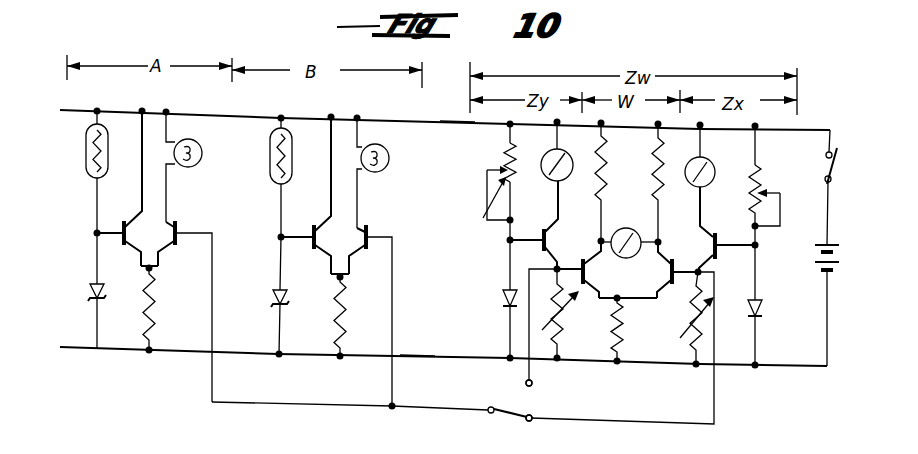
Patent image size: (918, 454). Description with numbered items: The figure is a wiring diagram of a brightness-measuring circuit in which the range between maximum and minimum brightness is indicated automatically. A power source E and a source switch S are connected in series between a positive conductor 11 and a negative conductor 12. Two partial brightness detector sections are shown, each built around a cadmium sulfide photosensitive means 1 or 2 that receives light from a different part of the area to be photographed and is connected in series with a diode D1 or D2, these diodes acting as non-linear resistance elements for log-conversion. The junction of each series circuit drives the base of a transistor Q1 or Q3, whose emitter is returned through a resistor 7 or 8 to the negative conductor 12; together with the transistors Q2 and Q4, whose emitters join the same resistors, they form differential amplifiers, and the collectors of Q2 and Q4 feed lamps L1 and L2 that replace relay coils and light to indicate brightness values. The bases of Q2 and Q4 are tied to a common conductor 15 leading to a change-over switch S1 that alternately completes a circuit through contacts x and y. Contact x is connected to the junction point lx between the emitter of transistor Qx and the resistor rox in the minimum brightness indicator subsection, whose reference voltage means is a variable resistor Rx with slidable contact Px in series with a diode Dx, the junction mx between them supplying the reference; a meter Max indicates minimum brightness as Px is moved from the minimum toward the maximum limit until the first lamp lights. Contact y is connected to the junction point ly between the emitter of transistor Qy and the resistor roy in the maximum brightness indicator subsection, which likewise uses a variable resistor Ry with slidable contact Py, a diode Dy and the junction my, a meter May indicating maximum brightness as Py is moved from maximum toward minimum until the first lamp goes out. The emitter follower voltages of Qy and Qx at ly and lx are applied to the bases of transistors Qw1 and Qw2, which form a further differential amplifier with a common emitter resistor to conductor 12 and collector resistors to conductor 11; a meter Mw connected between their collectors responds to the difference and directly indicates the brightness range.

The photosensitive means 1 is at (86, 150).
The photosensitive means 2 is at (270, 172).
The resistor 7 is at (160, 300).
The resistor 8 is at (349, 317).
The positive conductor 11 is at (458, 122).
The negative conductor 12 is at (416, 356).
The common conductor 15 is at (466, 409).
The transistor Q1 is at (139, 208).
The transistor Q2 is at (168, 222).
The transistor Q3 is at (327, 211).
The transistor Q4 is at (360, 225).
The lamp L1 is at (206, 140).
The lamp L2 is at (396, 149).
The diode D1 is at (90, 290).
The diode D2 is at (272, 295).
The slidable contact Py is at (487, 169).
The variable resistor Ry is at (483, 218).
The node my is at (506, 244).
The diode Dy is at (500, 306).
The transistor Qy is at (552, 243).
The meter May is at (571, 150).
The junction point ly is at (546, 270).
The resistor roy is at (569, 315).
The transistor Qw1 is at (599, 209).
The transistor Qw2 is at (670, 292).
The meter Mw is at (629, 230).
The resistor rox is at (686, 320).
The meter Max is at (717, 155).
The transistor Qx is at (714, 228).
The junction point lx is at (716, 278).
The node mx is at (760, 248).
The diode Dx is at (762, 311).
The slidable contact Px is at (762, 192).
The variable resistor Rx is at (775, 202).
The source switch S is at (837, 166).
The power source E is at (834, 263).
The change-over switch S1 is at (526, 408).
The contact y is at (532, 383).
The contact x is at (530, 422).